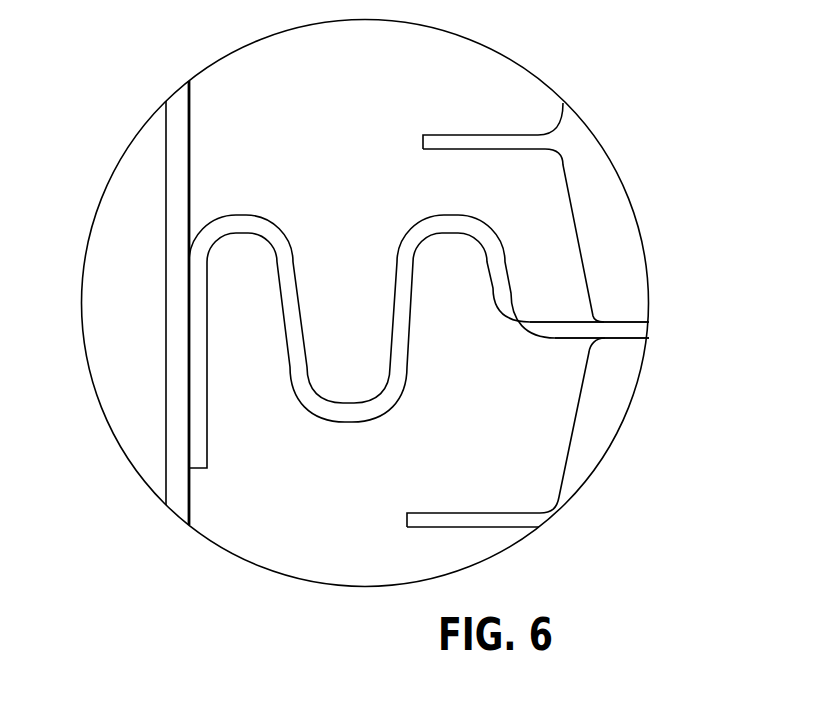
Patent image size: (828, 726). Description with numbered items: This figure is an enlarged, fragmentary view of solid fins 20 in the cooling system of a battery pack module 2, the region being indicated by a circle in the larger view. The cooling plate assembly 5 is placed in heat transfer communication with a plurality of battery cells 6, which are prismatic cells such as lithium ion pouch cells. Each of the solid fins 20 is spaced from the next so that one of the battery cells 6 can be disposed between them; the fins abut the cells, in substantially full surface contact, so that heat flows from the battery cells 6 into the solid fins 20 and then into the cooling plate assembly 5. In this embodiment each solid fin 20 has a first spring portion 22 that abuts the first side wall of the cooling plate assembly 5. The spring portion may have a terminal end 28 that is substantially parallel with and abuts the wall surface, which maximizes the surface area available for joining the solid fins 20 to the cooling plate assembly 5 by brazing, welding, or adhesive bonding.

The battery pack module 2 is at (652, 97).
The cooling plate assembly 5 is at (166, 362).
The battery cells 6 is at (598, 200).
The solid fins 20 is at (628, 321).
The first spring portion 22 is at (331, 162).
The terminal end 28 is at (172, 293).